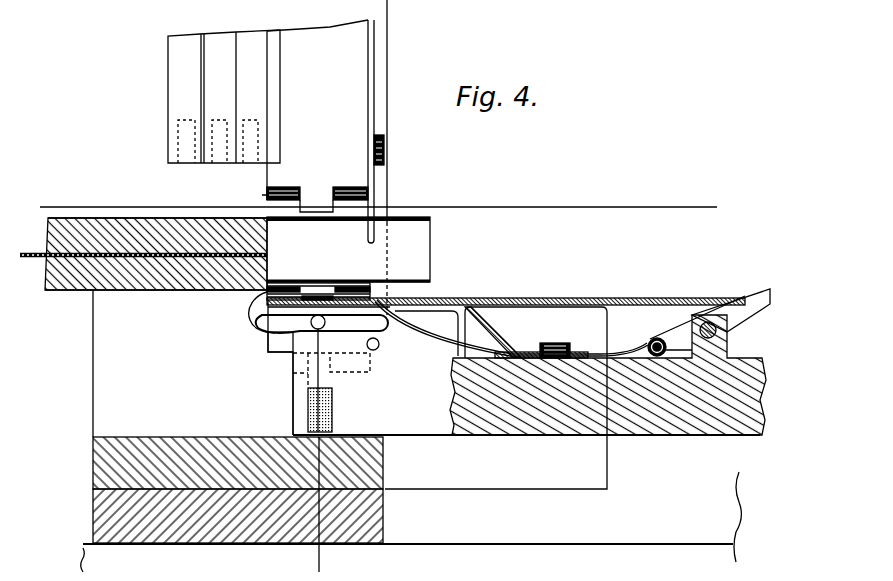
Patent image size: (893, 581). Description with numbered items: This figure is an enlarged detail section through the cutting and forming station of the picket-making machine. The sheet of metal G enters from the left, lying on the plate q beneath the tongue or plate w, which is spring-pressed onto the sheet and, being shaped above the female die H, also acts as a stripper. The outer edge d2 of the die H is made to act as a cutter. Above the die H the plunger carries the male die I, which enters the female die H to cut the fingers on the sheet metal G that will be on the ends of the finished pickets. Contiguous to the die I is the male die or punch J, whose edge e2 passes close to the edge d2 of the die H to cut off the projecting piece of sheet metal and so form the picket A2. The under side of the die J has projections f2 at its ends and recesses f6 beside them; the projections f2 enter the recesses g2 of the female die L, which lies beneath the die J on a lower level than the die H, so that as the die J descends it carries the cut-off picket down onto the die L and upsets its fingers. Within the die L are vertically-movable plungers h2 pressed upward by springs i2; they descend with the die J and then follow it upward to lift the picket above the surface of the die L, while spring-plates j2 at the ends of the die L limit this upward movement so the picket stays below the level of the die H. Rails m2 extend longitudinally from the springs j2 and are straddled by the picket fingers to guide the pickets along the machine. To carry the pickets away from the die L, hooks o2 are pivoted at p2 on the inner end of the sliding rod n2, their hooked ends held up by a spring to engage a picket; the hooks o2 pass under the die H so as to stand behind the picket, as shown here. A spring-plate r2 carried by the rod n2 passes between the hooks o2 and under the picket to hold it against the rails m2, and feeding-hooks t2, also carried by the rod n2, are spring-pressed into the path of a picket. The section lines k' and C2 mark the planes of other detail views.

The male die I is at (224, 96).
The male die or punch J is at (325, 110).
The section line k' is at (361, 286).
The section line C2 is at (386, 203).
The tongue or plate w is at (157, 213).
The sheet of metal G is at (143, 243).
The plate q is at (156, 254).
The female die H is at (220, 288).
The outer edge of the die H d2 is at (270, 255).
The spring-plates j2 is at (390, 139).
The recesses f6 is at (355, 177).
The edge of die J e2 is at (257, 192).
The projections f2 is at (316, 199).
The picket A2 is at (318, 283).
The rails m2 is at (506, 293).
The hooks or fingers o2 is at (318, 312).
The pivot p2 is at (325, 322).
The vertically-movable plungers h2 is at (280, 342).
The female die L is at (283, 356).
The springs i2 is at (331, 392).
The sliding rod n2 is at (608, 375).
The spring-plate r2 is at (493, 332).
The recesses g2 is at (560, 328).
The feeding-hooks t2 is at (731, 313).